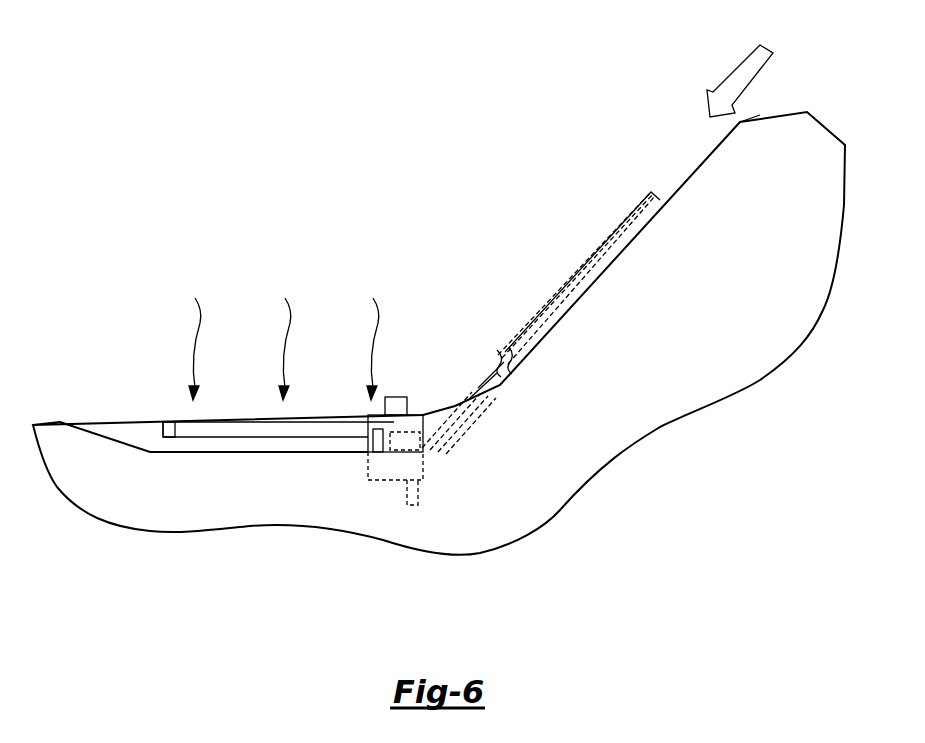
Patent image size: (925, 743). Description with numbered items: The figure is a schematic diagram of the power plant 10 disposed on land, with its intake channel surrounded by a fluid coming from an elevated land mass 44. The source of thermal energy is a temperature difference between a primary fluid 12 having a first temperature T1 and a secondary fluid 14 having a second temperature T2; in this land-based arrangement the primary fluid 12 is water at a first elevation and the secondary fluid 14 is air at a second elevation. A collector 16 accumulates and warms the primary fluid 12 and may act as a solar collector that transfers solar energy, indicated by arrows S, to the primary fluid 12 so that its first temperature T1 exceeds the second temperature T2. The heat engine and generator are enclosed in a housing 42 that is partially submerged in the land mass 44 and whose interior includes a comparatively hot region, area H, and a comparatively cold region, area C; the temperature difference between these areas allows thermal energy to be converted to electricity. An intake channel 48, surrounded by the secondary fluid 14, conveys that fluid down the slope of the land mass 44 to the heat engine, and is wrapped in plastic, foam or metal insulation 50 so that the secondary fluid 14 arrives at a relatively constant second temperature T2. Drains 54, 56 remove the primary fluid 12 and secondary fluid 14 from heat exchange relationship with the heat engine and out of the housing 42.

The power plant 10 is at (458, 163).
The primary fluid 12 is at (232, 430).
The secondary fluid 14 is at (741, 64).
The collector 16 is at (163, 430).
The housing 42 is at (424, 415).
The land mass 44 is at (719, 313).
The intake channel 48 is at (662, 197).
The insulation 50 is at (643, 207).
The drain 54 is at (398, 397).
The drain 56 is at (420, 492).
The solar energy arrows S is at (200, 323).
The comparatively hot region H is at (394, 422).
The comparatively cold region C is at (395, 466).
The first temperature T1 is at (170, 424).
The second temperature T2 is at (803, 45).